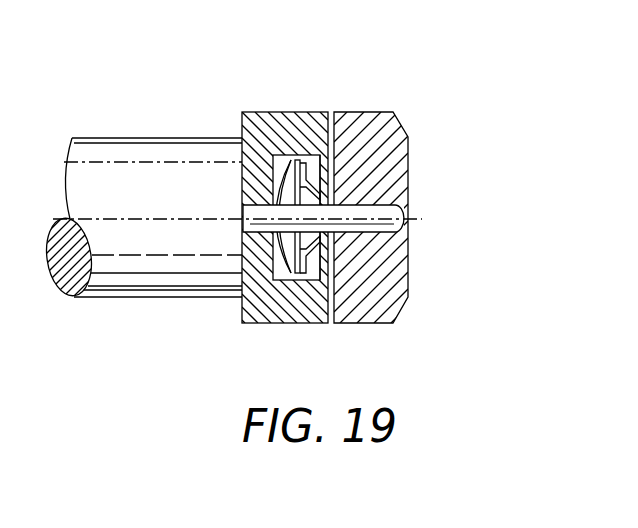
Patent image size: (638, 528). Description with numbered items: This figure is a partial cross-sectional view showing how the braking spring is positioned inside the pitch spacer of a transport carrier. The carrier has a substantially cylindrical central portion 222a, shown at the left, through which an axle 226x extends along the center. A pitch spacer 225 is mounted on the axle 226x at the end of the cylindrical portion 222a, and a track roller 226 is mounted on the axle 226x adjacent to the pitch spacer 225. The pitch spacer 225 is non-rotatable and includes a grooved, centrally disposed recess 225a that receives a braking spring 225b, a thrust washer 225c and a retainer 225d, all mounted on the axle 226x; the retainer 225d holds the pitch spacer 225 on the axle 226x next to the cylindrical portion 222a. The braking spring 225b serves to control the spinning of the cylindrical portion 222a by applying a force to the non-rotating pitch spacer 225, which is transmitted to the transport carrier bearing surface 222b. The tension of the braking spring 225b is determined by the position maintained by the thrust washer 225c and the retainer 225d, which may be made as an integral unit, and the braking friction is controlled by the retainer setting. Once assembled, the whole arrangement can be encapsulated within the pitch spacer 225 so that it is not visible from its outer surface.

The cylindrical central portion 222a is at (100, 158).
The transport carrier bearing surface 222b is at (242, 258).
The pitch spacer 225 is at (268, 128).
The grooved centrally disposed recess 225a is at (308, 148).
The braking spring 225b is at (281, 268).
The thrust washer 225c is at (298, 273).
The retainer 225d is at (307, 236).
The track roller 226 is at (378, 125).
The axle 226x is at (402, 207).